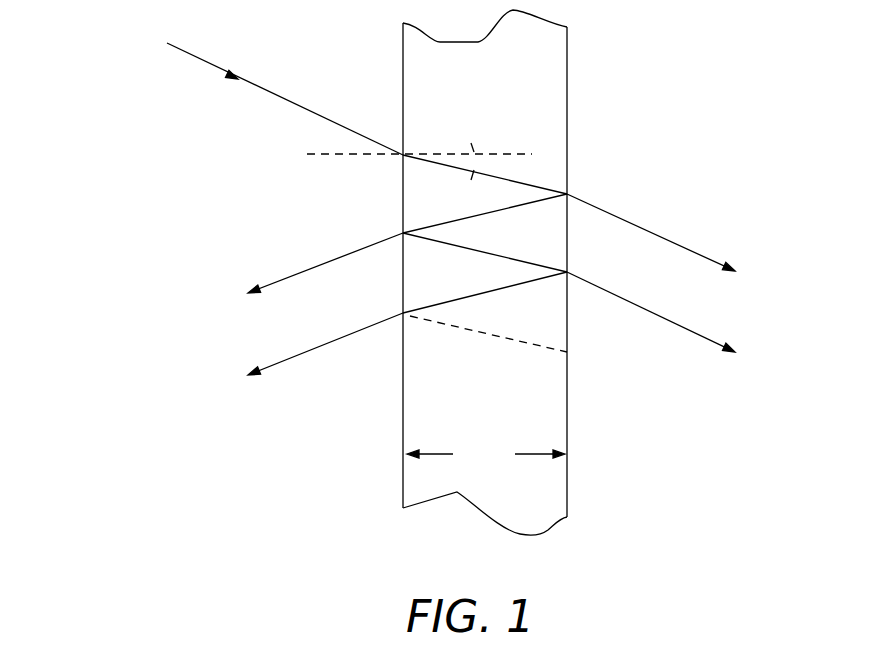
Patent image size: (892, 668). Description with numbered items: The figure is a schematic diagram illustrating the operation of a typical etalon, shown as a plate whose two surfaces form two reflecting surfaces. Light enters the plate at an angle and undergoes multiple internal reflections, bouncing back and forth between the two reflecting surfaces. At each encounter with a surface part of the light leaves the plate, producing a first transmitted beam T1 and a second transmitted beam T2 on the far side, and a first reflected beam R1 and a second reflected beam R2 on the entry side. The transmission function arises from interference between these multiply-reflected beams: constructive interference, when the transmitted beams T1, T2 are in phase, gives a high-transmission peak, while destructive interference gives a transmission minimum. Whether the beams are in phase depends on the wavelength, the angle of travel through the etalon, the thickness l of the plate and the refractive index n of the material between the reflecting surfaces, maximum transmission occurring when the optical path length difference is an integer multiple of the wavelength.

The refractive index n is at (485, 272).
The thickness l is at (486, 453).
The transmitted beam T1 is at (675, 252).
The transmitted beam T2 is at (675, 331).
The reflected beam R1 is at (293, 277).
The reflected beam R2 is at (293, 359).